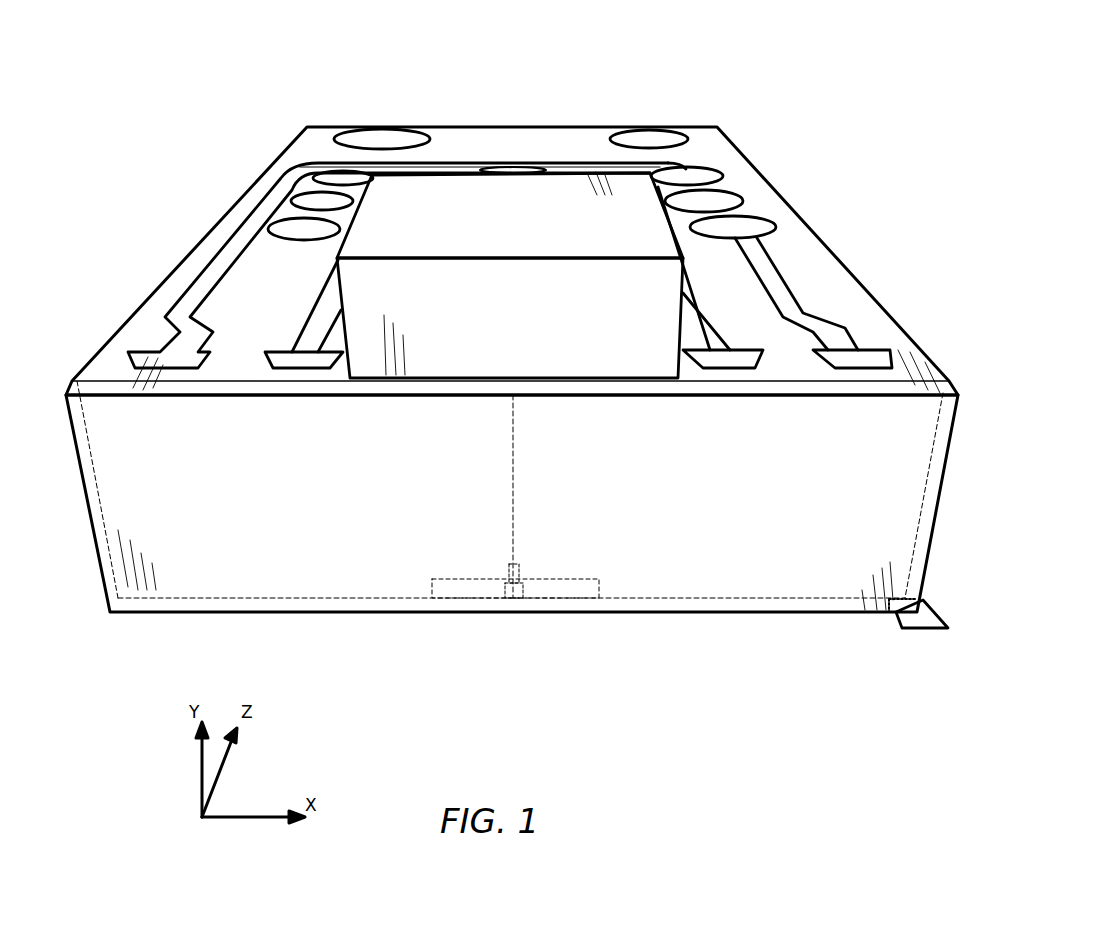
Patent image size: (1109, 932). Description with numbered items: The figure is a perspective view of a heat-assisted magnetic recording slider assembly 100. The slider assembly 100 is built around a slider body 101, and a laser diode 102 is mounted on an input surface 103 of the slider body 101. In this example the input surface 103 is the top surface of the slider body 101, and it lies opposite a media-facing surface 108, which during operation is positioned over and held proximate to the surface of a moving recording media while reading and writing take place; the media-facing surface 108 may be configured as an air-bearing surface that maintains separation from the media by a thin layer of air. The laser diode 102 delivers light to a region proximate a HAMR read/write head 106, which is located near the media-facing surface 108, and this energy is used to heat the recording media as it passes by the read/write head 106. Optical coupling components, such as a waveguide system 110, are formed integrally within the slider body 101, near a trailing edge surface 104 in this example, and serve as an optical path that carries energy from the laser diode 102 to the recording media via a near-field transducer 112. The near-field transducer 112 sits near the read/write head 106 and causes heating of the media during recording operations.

The HAMR slider assembly 100 is at (501, 384).
The slider body 101 is at (278, 160).
The laser diode 102 is at (462, 185).
The input surface 103 is at (142, 332).
The trailing edge surface 104 is at (182, 585).
The HAMR read/write head 106 is at (522, 600).
The media-facing surface 108 is at (938, 632).
The waveguide system 110 is at (513, 478).
The near-field transducer 112 is at (512, 600).